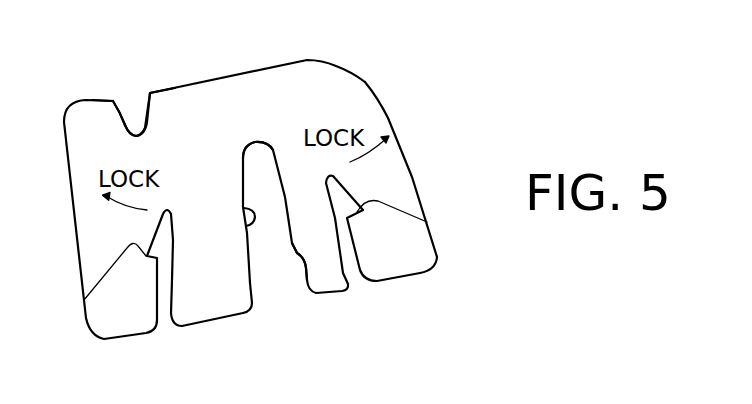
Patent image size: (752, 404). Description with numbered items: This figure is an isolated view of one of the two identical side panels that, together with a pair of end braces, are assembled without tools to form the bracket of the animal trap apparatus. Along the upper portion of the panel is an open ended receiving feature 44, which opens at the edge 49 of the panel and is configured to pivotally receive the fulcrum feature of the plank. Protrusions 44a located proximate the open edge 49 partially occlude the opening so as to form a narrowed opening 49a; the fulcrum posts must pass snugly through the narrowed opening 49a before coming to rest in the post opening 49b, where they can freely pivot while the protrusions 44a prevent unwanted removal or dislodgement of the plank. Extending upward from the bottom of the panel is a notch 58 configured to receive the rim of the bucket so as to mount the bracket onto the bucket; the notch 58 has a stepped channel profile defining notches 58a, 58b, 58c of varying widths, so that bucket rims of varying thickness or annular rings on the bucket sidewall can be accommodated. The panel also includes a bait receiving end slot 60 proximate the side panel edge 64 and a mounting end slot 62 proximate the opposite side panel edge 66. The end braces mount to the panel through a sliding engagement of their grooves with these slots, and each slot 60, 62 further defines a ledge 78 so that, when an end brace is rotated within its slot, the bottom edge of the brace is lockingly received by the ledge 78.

The receiving feature 44 is at (147, 116).
The protrusions 44a is at (116, 104).
The edge 49 is at (170, 88).
The narrowed opening 49a is at (130, 112).
The post opening 49b is at (138, 134).
The notch 58 is at (253, 276).
The notch 58a is at (270, 150).
The notch 58b is at (248, 212).
The notch 58c is at (306, 282).
The bait receiving end slot 60 is at (160, 315).
The mounting end slot 62 is at (360, 273).
The side panel edge 64 is at (75, 233).
The side panel edge 66 is at (412, 172).
The ledge 78 is at (84, 300).